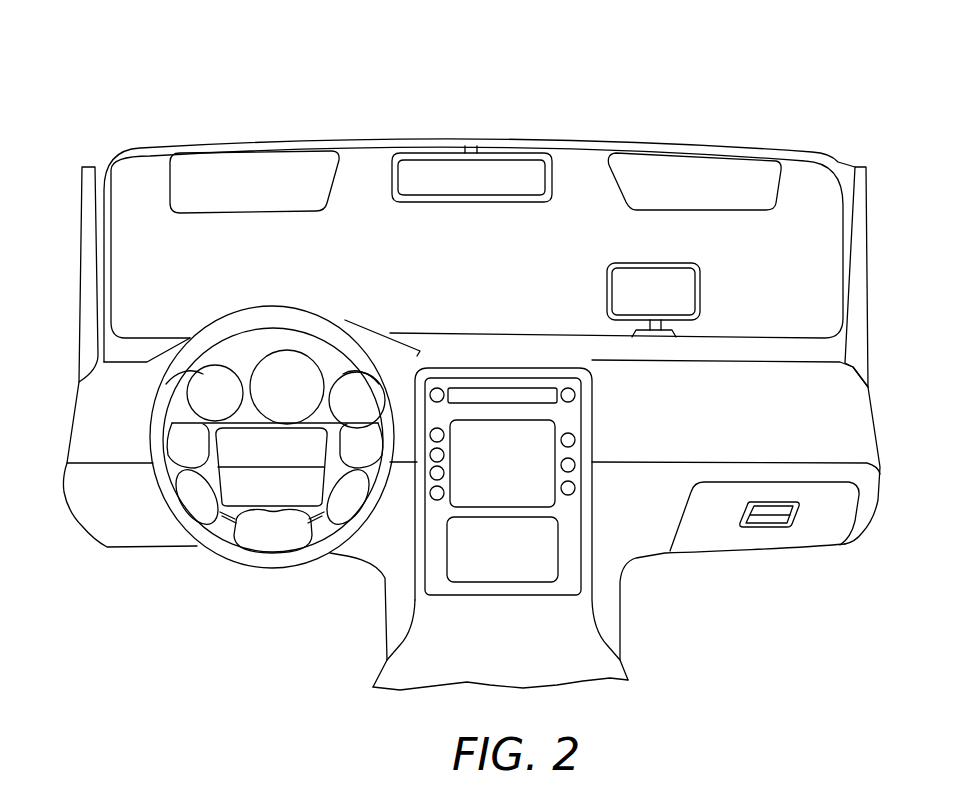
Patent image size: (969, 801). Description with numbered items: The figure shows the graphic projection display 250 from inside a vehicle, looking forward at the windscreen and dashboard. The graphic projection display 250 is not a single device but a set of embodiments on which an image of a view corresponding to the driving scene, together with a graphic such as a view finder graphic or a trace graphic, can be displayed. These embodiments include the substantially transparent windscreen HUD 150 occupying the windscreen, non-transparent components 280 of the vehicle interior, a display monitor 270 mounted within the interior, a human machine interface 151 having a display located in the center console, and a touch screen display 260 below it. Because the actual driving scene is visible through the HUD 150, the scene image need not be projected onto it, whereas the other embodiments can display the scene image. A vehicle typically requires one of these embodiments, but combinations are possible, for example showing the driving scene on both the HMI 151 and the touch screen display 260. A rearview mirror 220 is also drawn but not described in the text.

The graphic projection display 250 is at (146, 139).
The substantially transparent windscreen HUD 150 is at (153, 213).
The non-transparent components 280 is at (273, 191).
The rearview mirror display 220 is at (492, 191).
The display monitor 270 is at (703, 274).
The human machine interface (HMI) 151 is at (553, 432).
The touch screen display 260 is at (560, 532).